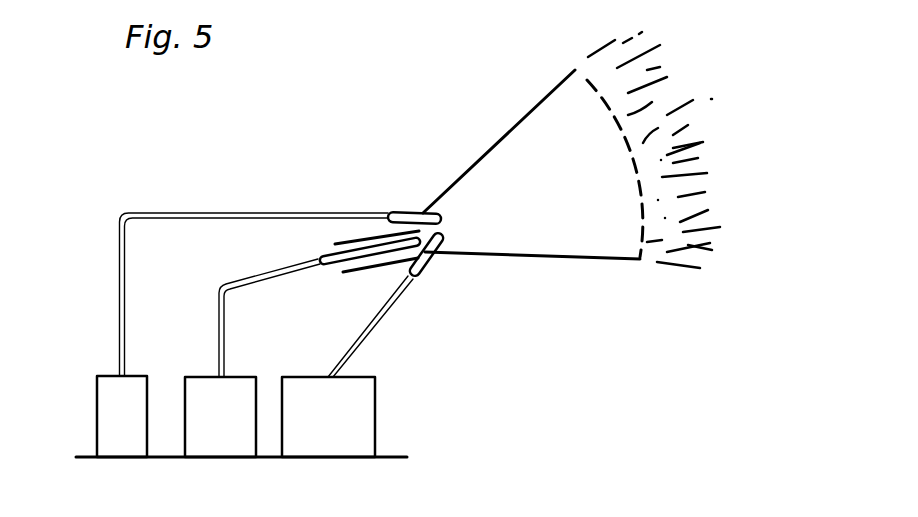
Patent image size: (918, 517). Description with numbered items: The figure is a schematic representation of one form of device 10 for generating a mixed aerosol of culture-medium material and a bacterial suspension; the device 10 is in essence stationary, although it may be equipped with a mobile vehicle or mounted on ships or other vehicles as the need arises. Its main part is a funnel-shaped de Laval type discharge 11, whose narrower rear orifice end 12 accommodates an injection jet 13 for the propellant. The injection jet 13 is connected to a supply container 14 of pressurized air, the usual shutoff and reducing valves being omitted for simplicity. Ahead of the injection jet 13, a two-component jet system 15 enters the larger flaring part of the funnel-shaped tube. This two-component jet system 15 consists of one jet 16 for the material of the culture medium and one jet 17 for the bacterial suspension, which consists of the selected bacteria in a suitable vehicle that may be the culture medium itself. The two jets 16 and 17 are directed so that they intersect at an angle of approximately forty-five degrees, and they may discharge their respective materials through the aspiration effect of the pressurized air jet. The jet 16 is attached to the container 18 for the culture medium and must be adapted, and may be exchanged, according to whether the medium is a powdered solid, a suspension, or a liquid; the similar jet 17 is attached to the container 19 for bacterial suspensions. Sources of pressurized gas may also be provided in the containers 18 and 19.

The device 10 is at (550, 172).
The funnel-shaped de Laval type discharge 11 is at (562, 250).
The narrower rear orifice end 12 is at (373, 268).
The injection jet 13 is at (343, 264).
The supply container 14 is at (200, 387).
The two-component jet system 15 is at (447, 218).
The jet for the material of the culture medium 16 is at (425, 265).
The jet for the bacterial suspension 17 is at (388, 213).
The container for the culture medium 18 is at (362, 402).
The container for bacterial suspensions 19 is at (112, 413).